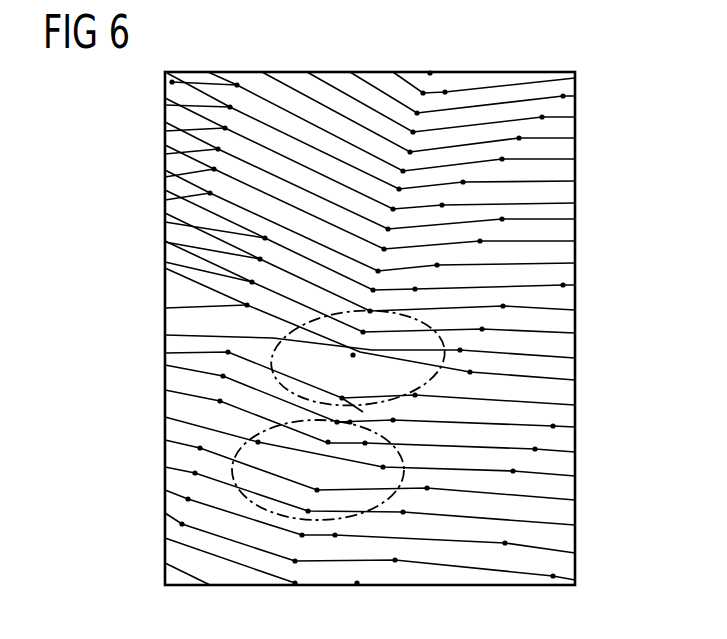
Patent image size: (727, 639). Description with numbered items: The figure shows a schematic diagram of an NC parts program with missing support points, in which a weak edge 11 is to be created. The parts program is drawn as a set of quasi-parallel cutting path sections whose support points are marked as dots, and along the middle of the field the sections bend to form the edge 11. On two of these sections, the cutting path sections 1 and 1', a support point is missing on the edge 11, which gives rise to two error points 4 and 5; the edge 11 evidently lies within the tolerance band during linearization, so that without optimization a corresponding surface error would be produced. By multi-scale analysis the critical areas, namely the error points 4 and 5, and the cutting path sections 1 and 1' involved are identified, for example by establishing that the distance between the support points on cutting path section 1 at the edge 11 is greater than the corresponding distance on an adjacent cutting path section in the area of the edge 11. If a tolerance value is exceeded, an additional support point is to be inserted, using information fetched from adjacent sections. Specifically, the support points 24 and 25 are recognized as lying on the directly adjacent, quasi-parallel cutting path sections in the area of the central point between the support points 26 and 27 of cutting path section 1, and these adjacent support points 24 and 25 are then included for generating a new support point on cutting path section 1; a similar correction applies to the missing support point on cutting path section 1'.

The cutting path section 1 is at (346, 215).
The cutting path section 1' is at (345, 469).
The error point 4 is at (230, 350).
The error point 5 is at (232, 467).
The edge 11 is at (432, 60).
The support point 24 is at (353, 356).
The support point 25 is at (363, 412).
The support point 26 is at (220, 323).
The support point 27 is at (470, 372).